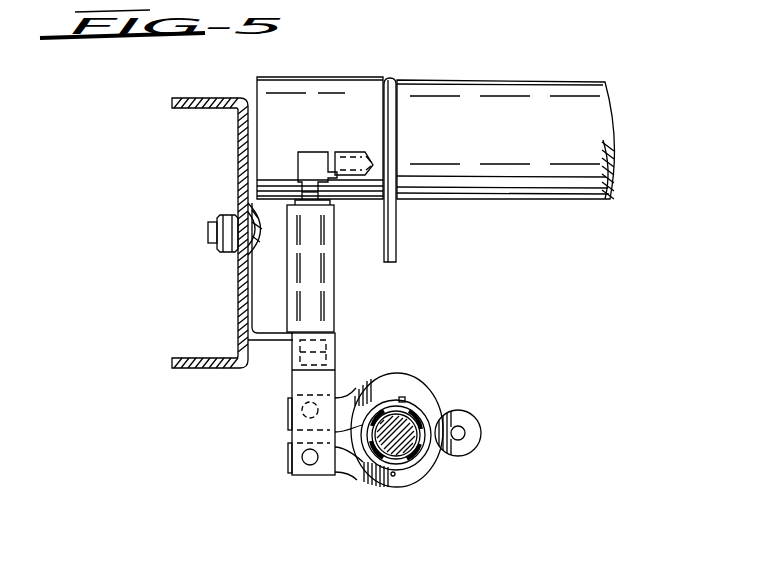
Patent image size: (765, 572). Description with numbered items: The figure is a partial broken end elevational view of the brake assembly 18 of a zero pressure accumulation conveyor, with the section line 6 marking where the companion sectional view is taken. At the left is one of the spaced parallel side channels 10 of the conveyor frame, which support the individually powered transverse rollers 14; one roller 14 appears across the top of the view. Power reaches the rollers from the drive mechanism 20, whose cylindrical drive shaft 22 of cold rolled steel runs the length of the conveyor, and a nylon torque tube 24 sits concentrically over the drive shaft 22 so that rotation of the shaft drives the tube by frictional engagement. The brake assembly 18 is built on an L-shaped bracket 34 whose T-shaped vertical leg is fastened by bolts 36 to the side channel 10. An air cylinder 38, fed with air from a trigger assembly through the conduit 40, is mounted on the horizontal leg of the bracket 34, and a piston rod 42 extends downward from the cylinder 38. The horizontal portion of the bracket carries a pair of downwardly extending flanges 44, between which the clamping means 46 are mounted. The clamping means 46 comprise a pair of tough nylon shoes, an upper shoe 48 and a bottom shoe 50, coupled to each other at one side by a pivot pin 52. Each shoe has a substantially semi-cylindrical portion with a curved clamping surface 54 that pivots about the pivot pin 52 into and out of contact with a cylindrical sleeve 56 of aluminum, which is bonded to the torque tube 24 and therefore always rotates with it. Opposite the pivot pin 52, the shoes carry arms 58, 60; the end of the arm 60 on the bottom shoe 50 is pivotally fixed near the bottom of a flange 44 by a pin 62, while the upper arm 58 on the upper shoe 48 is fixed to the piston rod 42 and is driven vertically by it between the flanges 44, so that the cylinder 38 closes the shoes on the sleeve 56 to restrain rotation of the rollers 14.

The section line 6- 6 is at (658, 95).
The side channel 10 is at (200, 356).
The roller 14 is at (470, 96).
The brake assembly 18 is at (388, 367).
The drive mechanism 20 is at (404, 432).
The drive shaft 22 is at (417, 452).
The torque tube 24 is at (422, 423).
The L-shaped bracket 34 is at (297, 380).
The bolt 36 is at (245, 206).
The air cylinder 38 is at (320, 293).
The conduit 40 is at (345, 165).
The piston rod 42 is at (333, 376).
The downwardly extending flange 44 is at (292, 404).
The clamping means 46 is at (445, 394).
The upper shoe 48 is at (394, 380).
The bottom shoe 50 is at (415, 480).
The pivot pin 52 is at (467, 432).
The curved clamping surface 54 is at (400, 399).
The cylindrical sleeve 56 is at (372, 463).
The upper arm 58 is at (290, 416).
The arm 60 is at (290, 458).
The pin 62 is at (310, 465).